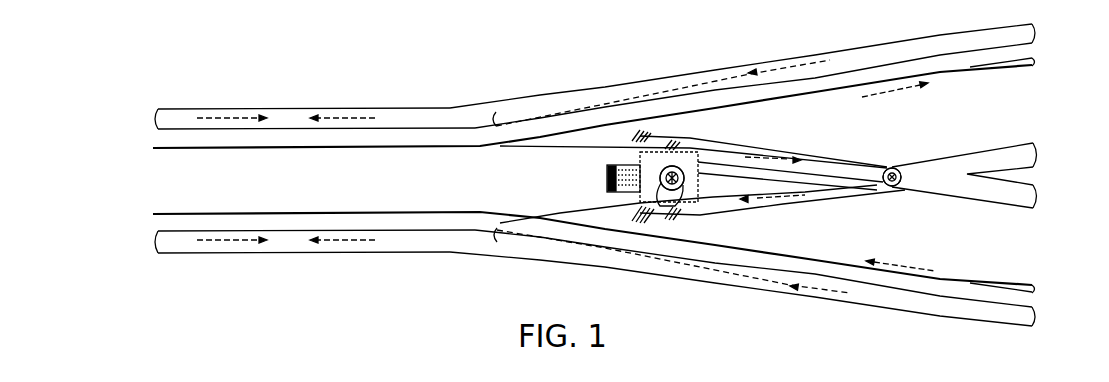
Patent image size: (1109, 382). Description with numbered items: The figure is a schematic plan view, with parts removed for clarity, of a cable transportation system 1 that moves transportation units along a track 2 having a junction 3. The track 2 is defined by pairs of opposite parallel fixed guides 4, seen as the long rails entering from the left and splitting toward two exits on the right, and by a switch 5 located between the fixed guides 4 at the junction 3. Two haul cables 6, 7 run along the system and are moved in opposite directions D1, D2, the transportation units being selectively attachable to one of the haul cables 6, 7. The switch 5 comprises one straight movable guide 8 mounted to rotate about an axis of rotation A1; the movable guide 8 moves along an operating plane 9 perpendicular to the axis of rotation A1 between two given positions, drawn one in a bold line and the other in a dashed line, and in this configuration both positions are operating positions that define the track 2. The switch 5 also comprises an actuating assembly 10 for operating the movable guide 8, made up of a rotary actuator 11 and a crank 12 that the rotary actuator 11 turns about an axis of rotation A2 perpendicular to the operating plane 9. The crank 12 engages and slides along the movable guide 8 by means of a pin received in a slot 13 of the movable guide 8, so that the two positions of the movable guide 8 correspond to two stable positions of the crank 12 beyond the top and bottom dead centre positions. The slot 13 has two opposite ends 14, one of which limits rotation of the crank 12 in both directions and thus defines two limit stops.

The cable transportation system 1 is at (312, 52).
The track 2 is at (142, 266).
The junction 3 is at (539, 278).
The fixed guides 4 is at (466, 118).
The switch 5 is at (828, 217).
The haul cable 6 is at (963, 72).
The haul cable 7 is at (962, 280).
The movable guide 8 is at (728, 147).
The operating plane 9 is at (806, 123).
The actuating assembly 10 is at (554, 177).
The rotary actuator 11 is at (637, 197).
The crank 12 is at (698, 178).
The slot 13 is at (620, 147).
The ends 14 is at (655, 135).
The axis of rotation A1 is at (902, 176).
The axis of rotation A2 is at (607, 156).
The direction D1 is at (896, 94).
The direction D2 is at (904, 259).